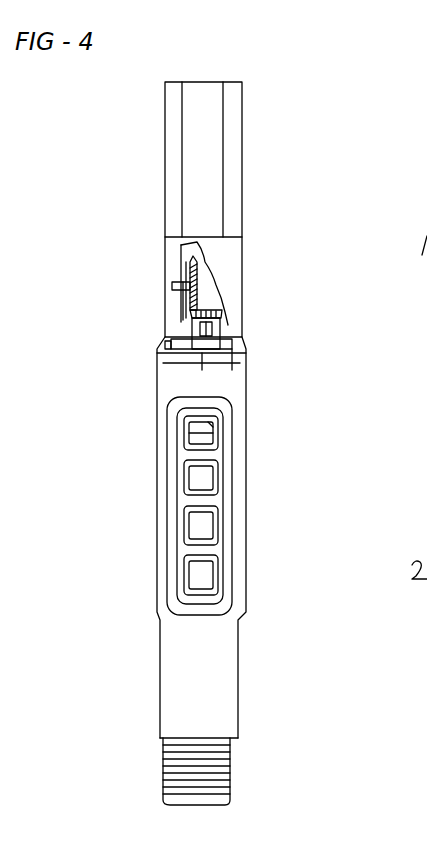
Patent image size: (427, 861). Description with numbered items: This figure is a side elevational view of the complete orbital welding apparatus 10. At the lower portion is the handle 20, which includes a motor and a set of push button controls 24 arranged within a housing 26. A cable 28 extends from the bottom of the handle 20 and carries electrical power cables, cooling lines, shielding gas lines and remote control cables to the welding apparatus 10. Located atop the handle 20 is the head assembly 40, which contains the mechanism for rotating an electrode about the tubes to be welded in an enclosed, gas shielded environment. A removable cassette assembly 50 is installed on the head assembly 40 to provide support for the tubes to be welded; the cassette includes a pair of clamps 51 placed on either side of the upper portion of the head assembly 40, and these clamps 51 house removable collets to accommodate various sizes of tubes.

The orbital welding apparatus 10 is at (62, 244).
The handle 20 is at (248, 472).
The push button controls 24 is at (173, 503).
The housing 26 is at (183, 663).
The cable 28 is at (165, 773).
The head assembly 40 is at (200, 96).
The removable cassette assembly 50 is at (254, 98).
The clamps 51 is at (172, 133).